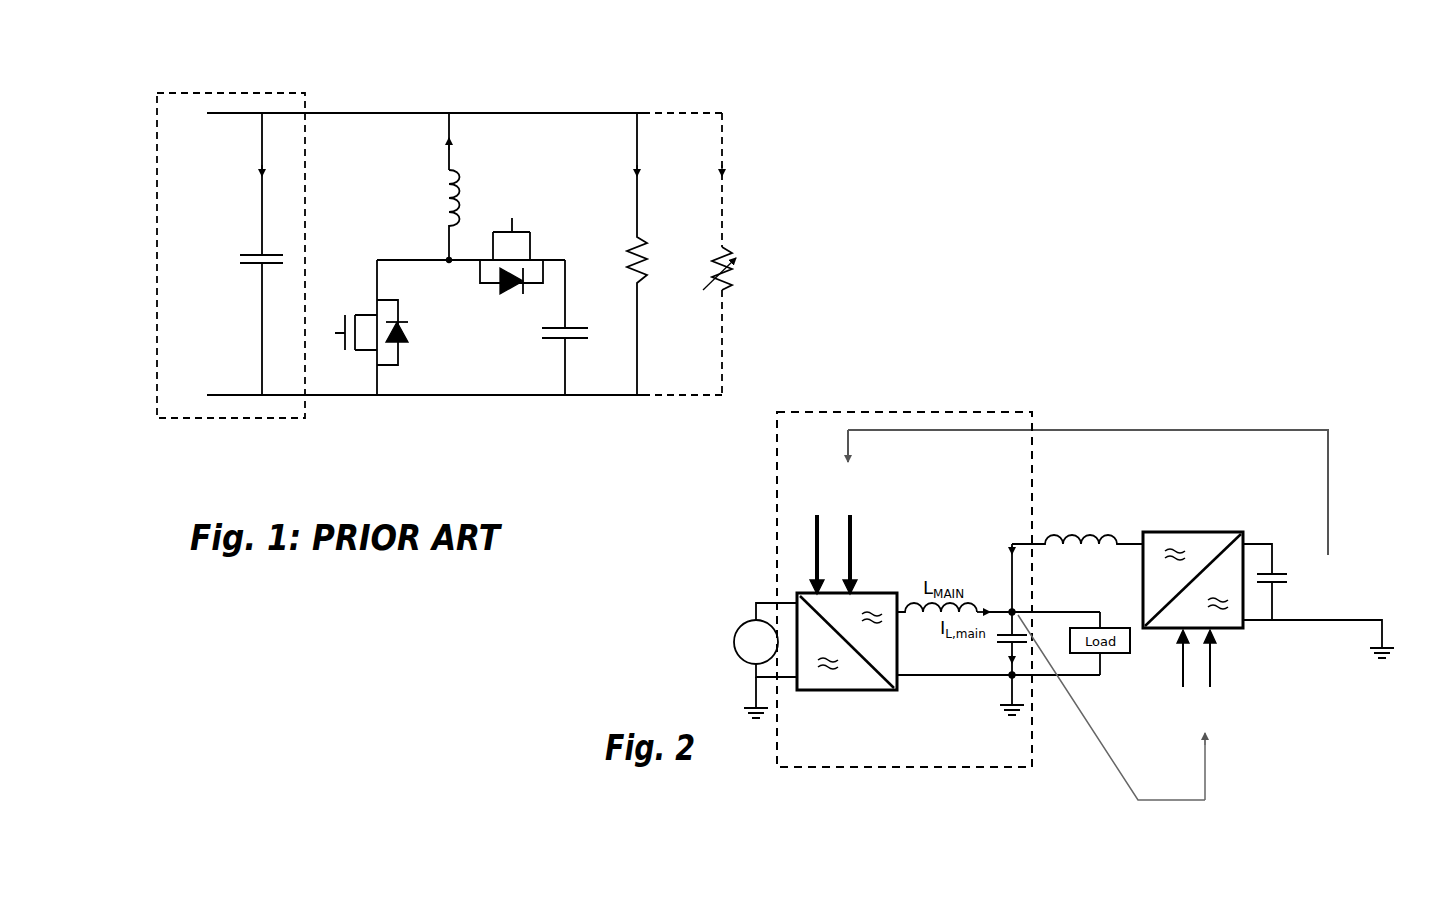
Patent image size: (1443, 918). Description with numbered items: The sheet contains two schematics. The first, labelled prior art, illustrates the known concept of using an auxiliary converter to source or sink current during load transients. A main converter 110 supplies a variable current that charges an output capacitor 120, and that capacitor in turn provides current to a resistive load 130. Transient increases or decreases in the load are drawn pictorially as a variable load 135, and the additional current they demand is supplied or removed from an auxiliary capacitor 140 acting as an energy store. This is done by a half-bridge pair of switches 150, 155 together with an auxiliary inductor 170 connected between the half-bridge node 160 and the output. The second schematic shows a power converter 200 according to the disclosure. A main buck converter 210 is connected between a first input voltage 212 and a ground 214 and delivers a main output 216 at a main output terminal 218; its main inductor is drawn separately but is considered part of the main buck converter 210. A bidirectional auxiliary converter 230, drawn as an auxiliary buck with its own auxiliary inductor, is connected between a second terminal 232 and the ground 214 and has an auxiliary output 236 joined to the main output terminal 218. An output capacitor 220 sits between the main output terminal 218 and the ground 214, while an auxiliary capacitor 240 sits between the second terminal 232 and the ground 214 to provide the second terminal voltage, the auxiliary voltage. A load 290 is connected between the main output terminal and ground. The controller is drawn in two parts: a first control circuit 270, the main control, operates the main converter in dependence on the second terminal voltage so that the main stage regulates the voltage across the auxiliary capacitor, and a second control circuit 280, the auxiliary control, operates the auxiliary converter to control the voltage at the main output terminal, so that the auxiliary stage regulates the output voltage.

In FIG. 1, the main converter 110 is at (178, 420).
In FIG. 1, the output capacitor 120 is at (262, 254).
In FIG. 1, the resistive load 130 is at (628, 258).
In FIG. 1, the variable load 135 is at (735, 260).
In FIG. 1, the auxiliary capacitor 140 is at (568, 340).
In FIG. 1, the switch S1 150 is at (357, 353).
In FIG. 1, the switch S2 155 is at (524, 230).
In FIG. 1, the half-bridge node 160 is at (448, 260).
In FIG. 1, the auxiliary inductor 170 is at (443, 193).
In FIG. 2, the power converter 200 is at (905, 376).
In FIG. 2, the main buck converter 210 is at (786, 566).
In FIG. 2, the first input voltage 212 is at (731, 602).
In FIG. 2, the ground 214 is at (755, 697).
In FIG. 2, the main output 216 is at (1003, 610).
In FIG. 2, the main output terminal 218 is at (1010, 598).
In FIG. 2, the output capacitor 220 is at (1003, 648).
In FIG. 2, the bidirectional auxiliary converter 230 is at (1142, 466).
In FIG. 2, the second terminal 232 is at (1247, 542).
In FIG. 2, the auxiliary output 236 is at (1015, 545).
In FIG. 2, the auxiliary capacitor 240 is at (1277, 572).
In FIG. 2, the first control circuit 270 is at (805, 480).
In FIG. 2, the second control circuit 280 is at (1218, 722).
In FIG. 2, the load 290 is at (1112, 655).